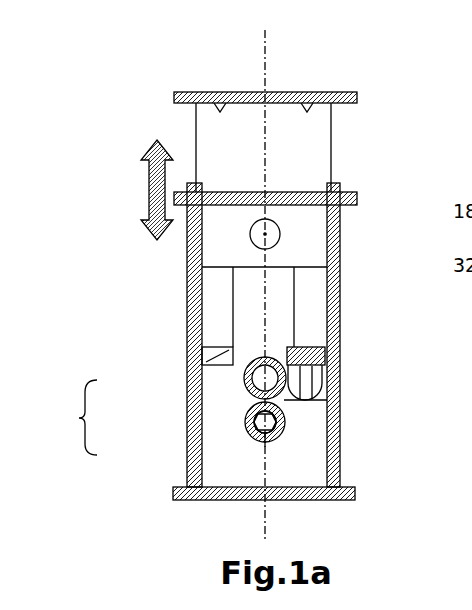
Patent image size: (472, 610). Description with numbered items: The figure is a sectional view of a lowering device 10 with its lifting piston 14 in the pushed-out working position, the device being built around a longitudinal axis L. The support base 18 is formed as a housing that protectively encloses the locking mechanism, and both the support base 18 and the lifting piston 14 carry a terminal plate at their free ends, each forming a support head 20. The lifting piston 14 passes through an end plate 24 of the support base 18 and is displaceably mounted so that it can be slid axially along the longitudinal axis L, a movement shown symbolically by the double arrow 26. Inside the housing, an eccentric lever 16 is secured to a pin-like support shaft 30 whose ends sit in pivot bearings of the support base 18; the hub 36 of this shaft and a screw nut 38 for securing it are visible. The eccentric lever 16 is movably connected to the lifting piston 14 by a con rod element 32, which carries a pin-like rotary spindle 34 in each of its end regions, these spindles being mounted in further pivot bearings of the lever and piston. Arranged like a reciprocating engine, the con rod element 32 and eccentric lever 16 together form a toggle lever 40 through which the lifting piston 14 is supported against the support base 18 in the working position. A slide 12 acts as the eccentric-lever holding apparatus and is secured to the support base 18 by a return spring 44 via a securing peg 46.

The lowering device 10 is at (128, 105).
The longitudinal axis L is at (266, 72).
The support head 20 is at (358, 96).
The lifting piston 14 is at (296, 152).
The end plate 24 is at (352, 196).
The support base 18 is at (195, 280).
The double arrow 26 is at (147, 193).
The rotary spindle 34 is at (265, 234).
The con rod element 32 is at (248, 308).
The slide 12 is at (203, 364).
The securing peg 46 is at (290, 346).
The return spring 44 is at (296, 368).
The eccentric lever 16 is at (245, 414).
The support shaft 30 is at (245, 436).
The screw nut 38 is at (284, 430).
The hub 36 is at (266, 445).
The toggle lever 40 is at (79, 418).